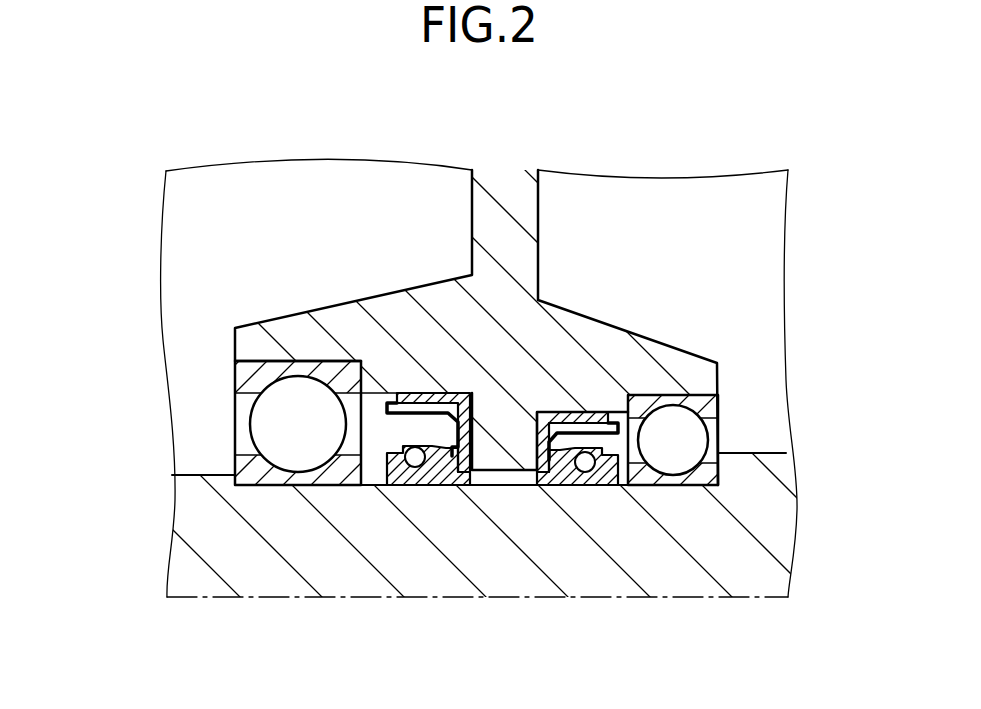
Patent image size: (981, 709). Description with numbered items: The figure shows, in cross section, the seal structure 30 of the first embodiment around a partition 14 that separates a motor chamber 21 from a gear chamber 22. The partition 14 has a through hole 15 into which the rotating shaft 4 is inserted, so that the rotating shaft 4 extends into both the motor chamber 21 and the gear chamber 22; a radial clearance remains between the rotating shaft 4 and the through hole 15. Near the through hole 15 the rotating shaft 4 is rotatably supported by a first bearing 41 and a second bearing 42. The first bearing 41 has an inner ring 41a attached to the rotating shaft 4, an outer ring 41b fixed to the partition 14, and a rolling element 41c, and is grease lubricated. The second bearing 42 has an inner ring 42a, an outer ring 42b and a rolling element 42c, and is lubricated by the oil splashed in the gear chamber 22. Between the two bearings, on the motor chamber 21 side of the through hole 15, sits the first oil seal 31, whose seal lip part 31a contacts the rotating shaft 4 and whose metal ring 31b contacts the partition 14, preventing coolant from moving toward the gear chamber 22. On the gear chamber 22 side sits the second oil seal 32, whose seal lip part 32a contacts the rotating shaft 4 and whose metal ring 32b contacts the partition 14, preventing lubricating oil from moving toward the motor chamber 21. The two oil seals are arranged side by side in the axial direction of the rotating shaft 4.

The seal structure 30 is at (686, 120).
The partition 14 is at (518, 203).
The through hole 15 is at (500, 480).
The motor chamber 21 is at (731, 226).
The gear chamber 22 is at (229, 226).
The rotating shaft 4 is at (728, 540).
The first bearing 41 is at (740, 429).
The inner ring 41a is at (707, 477).
The outer ring 41b is at (707, 407).
The rolling element 41c is at (693, 438).
The second bearing 42 is at (257, 422).
The inner ring 42a is at (245, 467).
The outer ring 42b is at (255, 381).
The rolling element 42c is at (258, 428).
The first oil seal 31 is at (588, 447).
The seal lip part 31a is at (602, 480).
The metal ring 31b is at (566, 412).
The second oil seal 32 is at (432, 447).
The seal lip part 32a is at (403, 458).
The metal ring 32b is at (430, 393).